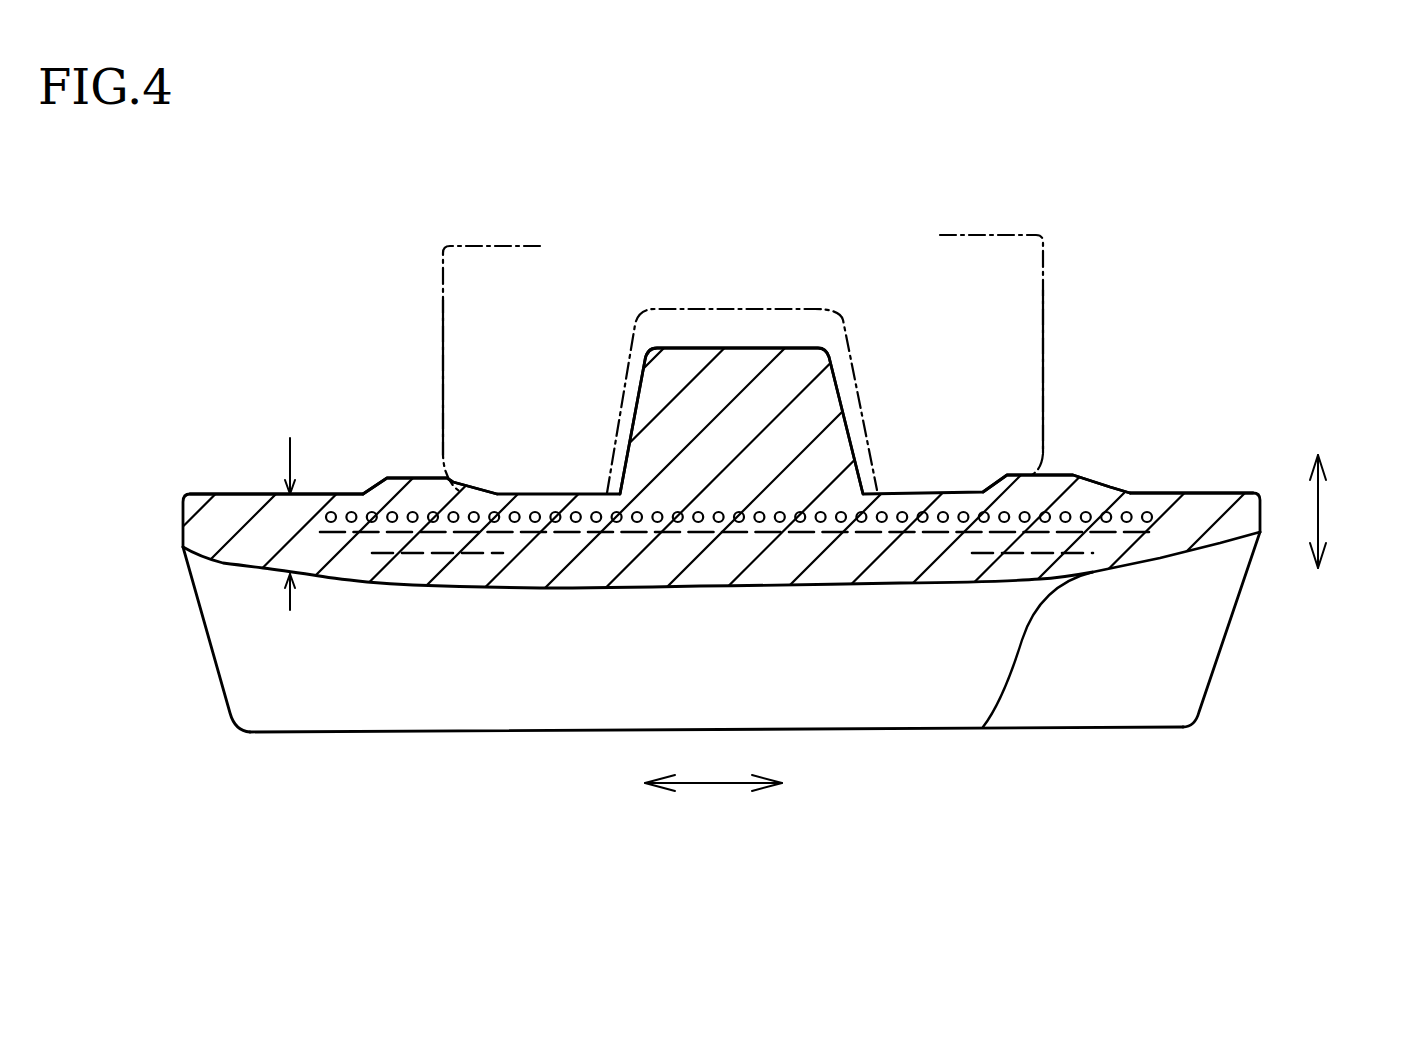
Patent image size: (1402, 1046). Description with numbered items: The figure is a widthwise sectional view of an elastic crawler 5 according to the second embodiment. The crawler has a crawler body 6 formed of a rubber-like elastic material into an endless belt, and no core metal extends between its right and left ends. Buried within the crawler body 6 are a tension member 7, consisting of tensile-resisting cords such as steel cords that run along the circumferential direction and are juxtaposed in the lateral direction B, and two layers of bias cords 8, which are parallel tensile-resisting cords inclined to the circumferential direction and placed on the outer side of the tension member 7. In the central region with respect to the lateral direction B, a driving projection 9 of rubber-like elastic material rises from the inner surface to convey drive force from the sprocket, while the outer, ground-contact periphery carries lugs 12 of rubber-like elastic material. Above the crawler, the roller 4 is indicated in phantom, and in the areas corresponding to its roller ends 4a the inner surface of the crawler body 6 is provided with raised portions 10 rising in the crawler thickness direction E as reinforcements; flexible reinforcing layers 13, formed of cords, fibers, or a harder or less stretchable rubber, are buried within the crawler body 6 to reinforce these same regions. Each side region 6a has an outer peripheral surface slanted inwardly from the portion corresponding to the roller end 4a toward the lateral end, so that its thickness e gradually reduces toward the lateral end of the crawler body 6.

The roller 4 is at (1050, 273).
The roller end 4a is at (437, 360).
The elastic crawler 5 is at (1205, 460).
The crawler body 6 is at (1003, 583).
The side region 6a is at (342, 493).
The tension member 7 is at (833, 516).
The bias cords 8 is at (1127, 528).
The driving projection 9 is at (773, 347).
The raised portion 10 is at (398, 477).
The lug 12 is at (533, 733).
The reinforcing layer 13 is at (405, 556).
The thickness e is at (196, 582).
The crawler thickness direction E is at (1323, 520).
The lateral direction B is at (712, 785).